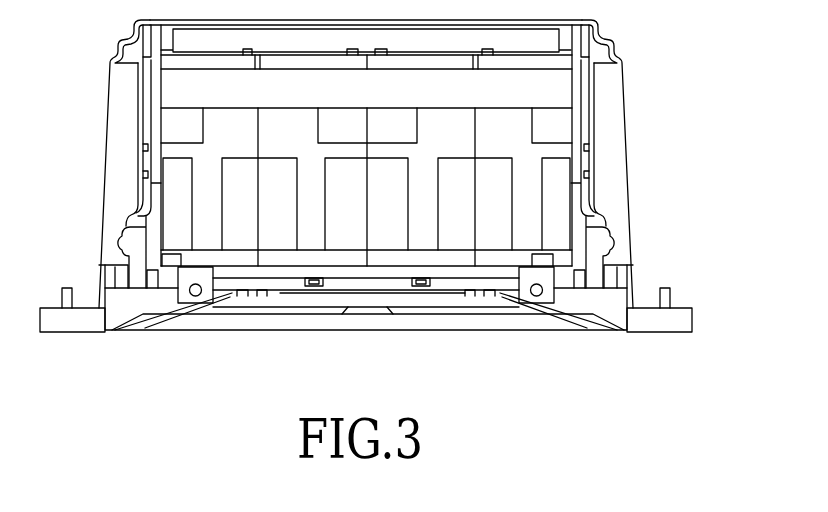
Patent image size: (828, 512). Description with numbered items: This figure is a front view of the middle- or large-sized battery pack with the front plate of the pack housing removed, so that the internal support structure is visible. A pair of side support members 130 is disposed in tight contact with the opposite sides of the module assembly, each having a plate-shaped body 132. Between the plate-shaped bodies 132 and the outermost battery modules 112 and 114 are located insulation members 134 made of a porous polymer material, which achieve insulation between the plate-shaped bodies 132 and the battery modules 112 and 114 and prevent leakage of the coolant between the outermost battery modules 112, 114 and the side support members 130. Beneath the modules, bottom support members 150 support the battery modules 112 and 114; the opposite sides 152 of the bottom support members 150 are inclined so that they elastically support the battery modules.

The side support member 130 is at (600, 107).
The plate-shaped body 132 is at (585, 128).
The insulation member 134 is at (590, 219).
The outermost battery module 112 is at (205, 225).
The outermost battery module 114 is at (522, 227).
The bottom support member 150 is at (373, 295).
The opposite side 152 is at (232, 298).